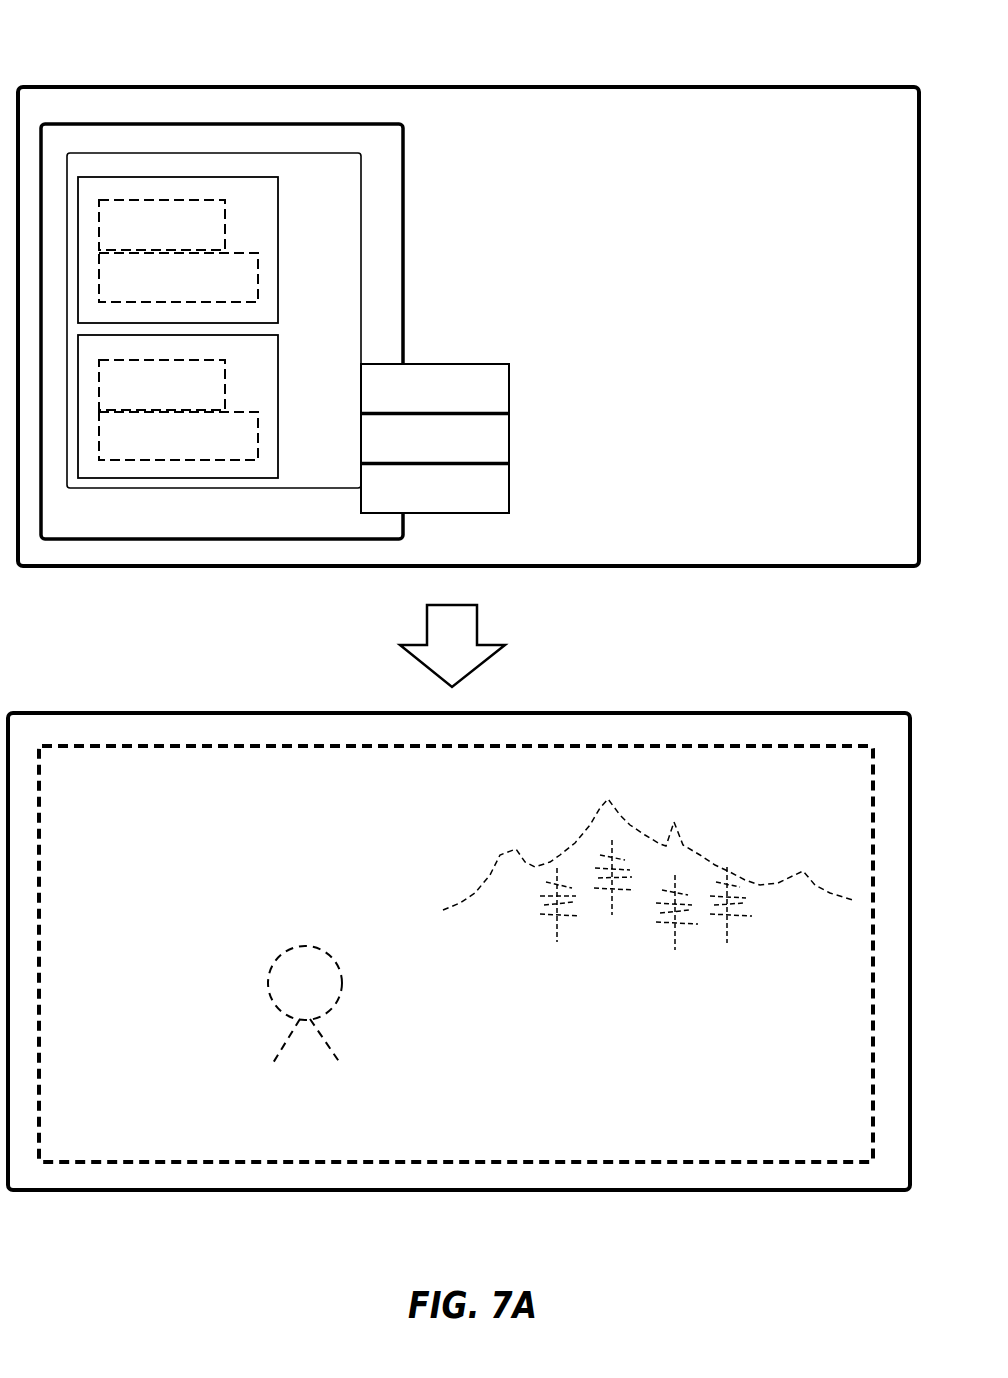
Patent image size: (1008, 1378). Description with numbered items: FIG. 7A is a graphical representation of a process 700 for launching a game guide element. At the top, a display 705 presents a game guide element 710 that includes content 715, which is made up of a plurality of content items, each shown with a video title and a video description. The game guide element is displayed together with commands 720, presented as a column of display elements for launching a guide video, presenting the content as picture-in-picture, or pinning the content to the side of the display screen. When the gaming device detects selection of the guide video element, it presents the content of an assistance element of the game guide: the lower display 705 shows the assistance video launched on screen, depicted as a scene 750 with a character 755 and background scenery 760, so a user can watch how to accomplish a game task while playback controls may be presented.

The process for launching a game guide element 700 is at (82, 48).
The display 705 is at (797, 87).
The game guide element 710 is at (403, 178).
The content 715 is at (361, 240).
The commands 720 is at (521, 334).
The game scene 750 is at (163, 832).
The launch game element 755 is at (340, 998).
The mountains and trees 760 is at (541, 827).